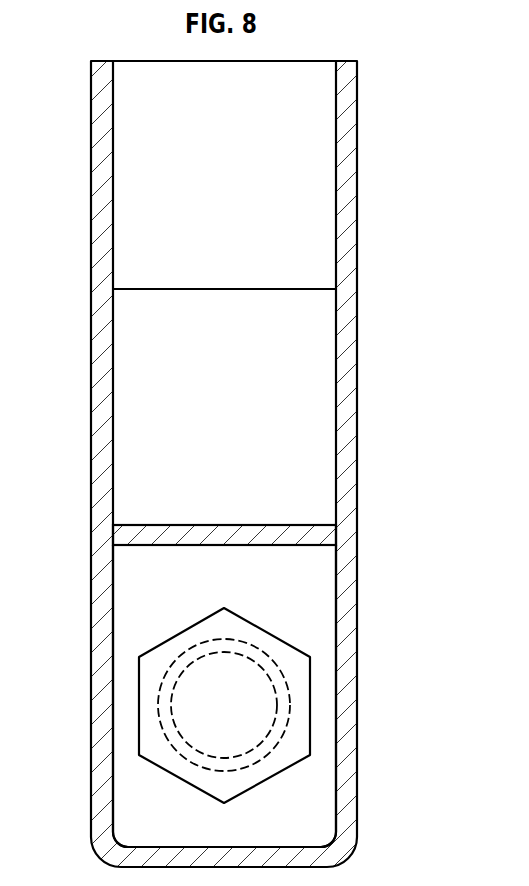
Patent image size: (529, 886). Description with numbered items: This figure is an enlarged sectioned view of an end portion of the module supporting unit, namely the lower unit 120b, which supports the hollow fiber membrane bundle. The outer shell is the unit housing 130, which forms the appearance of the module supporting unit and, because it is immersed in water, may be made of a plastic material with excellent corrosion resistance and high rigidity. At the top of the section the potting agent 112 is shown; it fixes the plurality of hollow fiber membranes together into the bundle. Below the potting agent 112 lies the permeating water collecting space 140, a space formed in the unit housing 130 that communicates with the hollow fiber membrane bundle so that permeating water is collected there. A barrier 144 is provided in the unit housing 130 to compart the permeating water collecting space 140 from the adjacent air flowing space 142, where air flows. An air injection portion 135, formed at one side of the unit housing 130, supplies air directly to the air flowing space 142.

The lower unit 120b is at (259, 464).
The unit housing 130 is at (350, 397).
The potting agent 112 is at (132, 180).
The permeating water collecting space 140 is at (159, 410).
The barrier 144 is at (125, 535).
The air flowing space 142 is at (158, 587).
The air injection portion 135 is at (163, 712).